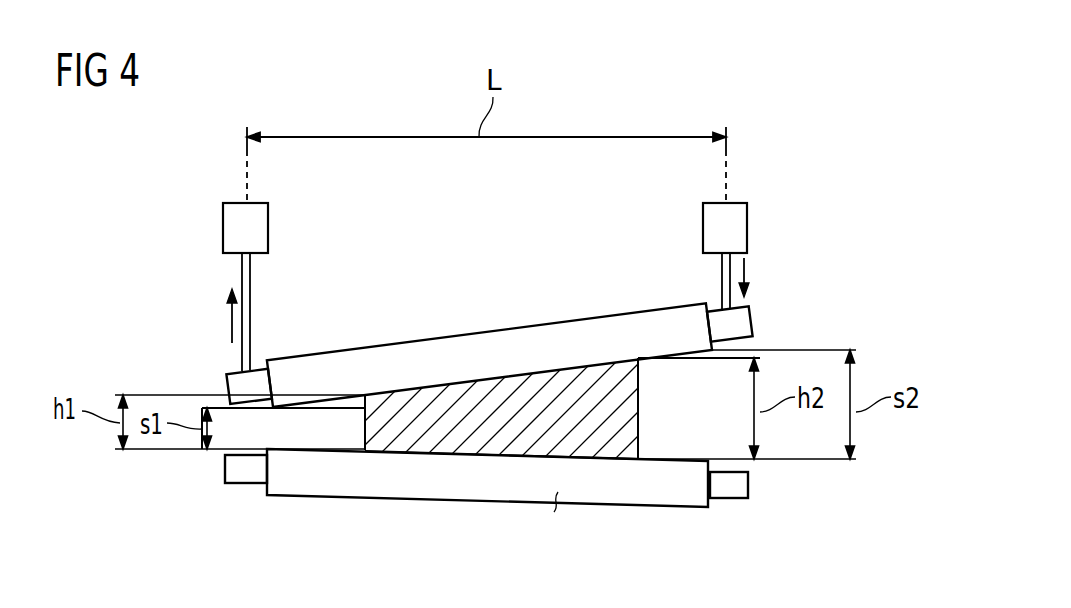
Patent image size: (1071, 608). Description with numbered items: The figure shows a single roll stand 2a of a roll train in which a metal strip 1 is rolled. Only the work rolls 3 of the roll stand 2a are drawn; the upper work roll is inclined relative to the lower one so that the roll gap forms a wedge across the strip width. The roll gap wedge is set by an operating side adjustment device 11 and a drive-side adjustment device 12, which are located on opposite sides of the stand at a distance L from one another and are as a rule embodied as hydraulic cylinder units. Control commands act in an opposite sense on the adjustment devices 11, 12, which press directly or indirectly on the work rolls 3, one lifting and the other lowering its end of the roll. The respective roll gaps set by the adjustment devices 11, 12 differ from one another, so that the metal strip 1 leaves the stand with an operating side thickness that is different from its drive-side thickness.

The metal strip 1 is at (458, 393).
The work rolls 3 is at (555, 333).
The operating side adjustment device 11 is at (268, 231).
The drive-side adjustment device 12 is at (747, 229).
The roll stand 2a is at (800, 135).